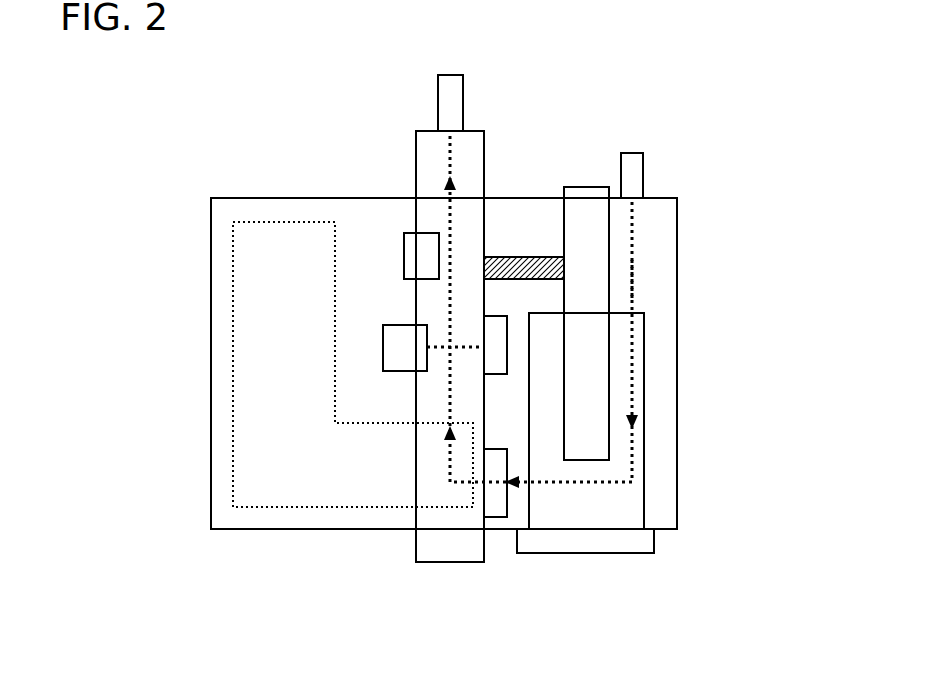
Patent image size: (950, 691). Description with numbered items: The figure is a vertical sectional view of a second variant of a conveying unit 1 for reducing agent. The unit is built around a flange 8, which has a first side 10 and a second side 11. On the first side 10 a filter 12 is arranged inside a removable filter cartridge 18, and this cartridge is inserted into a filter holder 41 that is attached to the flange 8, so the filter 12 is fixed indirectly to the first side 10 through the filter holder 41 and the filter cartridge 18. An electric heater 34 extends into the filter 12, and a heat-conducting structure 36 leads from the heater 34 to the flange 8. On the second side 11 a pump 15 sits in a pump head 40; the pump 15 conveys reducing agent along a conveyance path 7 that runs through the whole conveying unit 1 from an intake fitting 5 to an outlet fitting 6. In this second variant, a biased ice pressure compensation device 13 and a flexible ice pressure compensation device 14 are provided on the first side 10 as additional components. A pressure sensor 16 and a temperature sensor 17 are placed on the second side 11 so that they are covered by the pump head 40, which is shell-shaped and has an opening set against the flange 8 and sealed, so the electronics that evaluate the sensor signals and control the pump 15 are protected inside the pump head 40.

The conveying unit 1 is at (706, 113).
The intake fitting 5 is at (643, 162).
The outlet fitting 6 is at (437, 102).
The conveyance path 7 is at (632, 281).
The flange 8 is at (463, 563).
The first side 10 is at (490, 157).
The second side 11 is at (400, 157).
The filter 12 is at (643, 449).
The biased ice pressure compensation device 13 is at (493, 518).
The flexible ice pressure compensation device 14 is at (507, 347).
The pump 15 is at (235, 268).
The pressure sensor 16 is at (383, 350).
The temperature sensor 17 is at (410, 233).
The filter cartridge 18 is at (555, 573).
The heater 34 is at (580, 187).
The heat-conducting structure 36 is at (519, 257).
The pump head 40 is at (290, 530).
The filter holder 41 is at (680, 529).